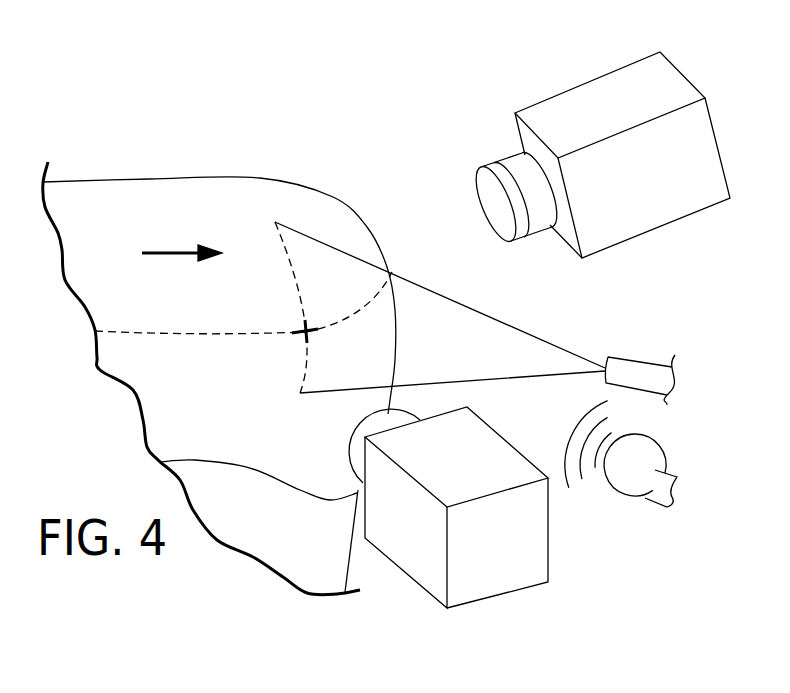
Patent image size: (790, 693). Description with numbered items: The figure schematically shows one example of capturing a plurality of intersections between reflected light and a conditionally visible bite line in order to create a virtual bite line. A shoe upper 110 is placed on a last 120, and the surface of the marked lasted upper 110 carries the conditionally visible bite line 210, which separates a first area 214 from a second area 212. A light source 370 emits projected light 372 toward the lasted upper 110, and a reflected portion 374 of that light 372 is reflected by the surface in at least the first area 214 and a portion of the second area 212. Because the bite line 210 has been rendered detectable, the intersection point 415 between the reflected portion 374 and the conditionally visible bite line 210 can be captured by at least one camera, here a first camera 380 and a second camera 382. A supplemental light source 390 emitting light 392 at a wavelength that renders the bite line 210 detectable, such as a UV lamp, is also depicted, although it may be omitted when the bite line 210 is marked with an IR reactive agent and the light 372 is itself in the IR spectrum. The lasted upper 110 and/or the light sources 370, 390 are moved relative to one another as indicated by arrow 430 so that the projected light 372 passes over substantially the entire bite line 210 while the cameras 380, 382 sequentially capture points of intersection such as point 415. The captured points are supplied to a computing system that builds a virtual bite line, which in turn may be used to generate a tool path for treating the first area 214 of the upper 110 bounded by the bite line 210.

The shoe upper 110 is at (248, 454).
The last 120 is at (317, 540).
The conditionally visible bite line 210 is at (166, 339).
The second area 212 is at (320, 443).
The first area 214 is at (245, 226).
The light source 370 is at (643, 386).
The light 372 is at (441, 294).
The reflected portion 374 is at (288, 290).
The first camera 380 is at (543, 110).
The second camera 382 is at (432, 585).
The supplemental light source 390 is at (633, 498).
The light 392 is at (568, 443).
The intersection point 415 is at (300, 336).
The arrow 430 is at (171, 256).